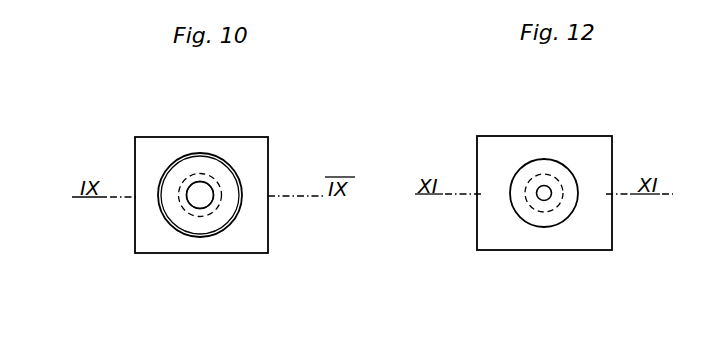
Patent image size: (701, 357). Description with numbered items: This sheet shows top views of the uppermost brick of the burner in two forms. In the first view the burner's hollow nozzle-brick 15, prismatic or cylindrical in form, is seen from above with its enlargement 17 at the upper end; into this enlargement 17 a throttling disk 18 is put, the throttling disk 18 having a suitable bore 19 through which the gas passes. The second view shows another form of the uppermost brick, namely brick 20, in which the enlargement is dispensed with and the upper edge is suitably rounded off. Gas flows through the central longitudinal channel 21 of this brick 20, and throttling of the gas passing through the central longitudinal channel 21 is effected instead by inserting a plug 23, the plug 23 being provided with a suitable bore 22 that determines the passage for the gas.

In FIG. 10, the nozzle-brick 15 is at (250, 217).
In FIG. 10, the enlargement 17 is at (215, 157).
In FIG. 10, the throttling disk 18 is at (223, 185).
In FIG. 10, the bore 19 is at (200, 195).
In FIG. 10, the central longitudinal channel 21 is at (203, 210).
In FIG. 12, the central longitudinal channel 21 is at (548, 182).
In FIG. 12, the brick 20 is at (492, 223).
In FIG. 12, the bore 22 is at (547, 197).
In FIG. 12, the plug 23 is at (567, 200).